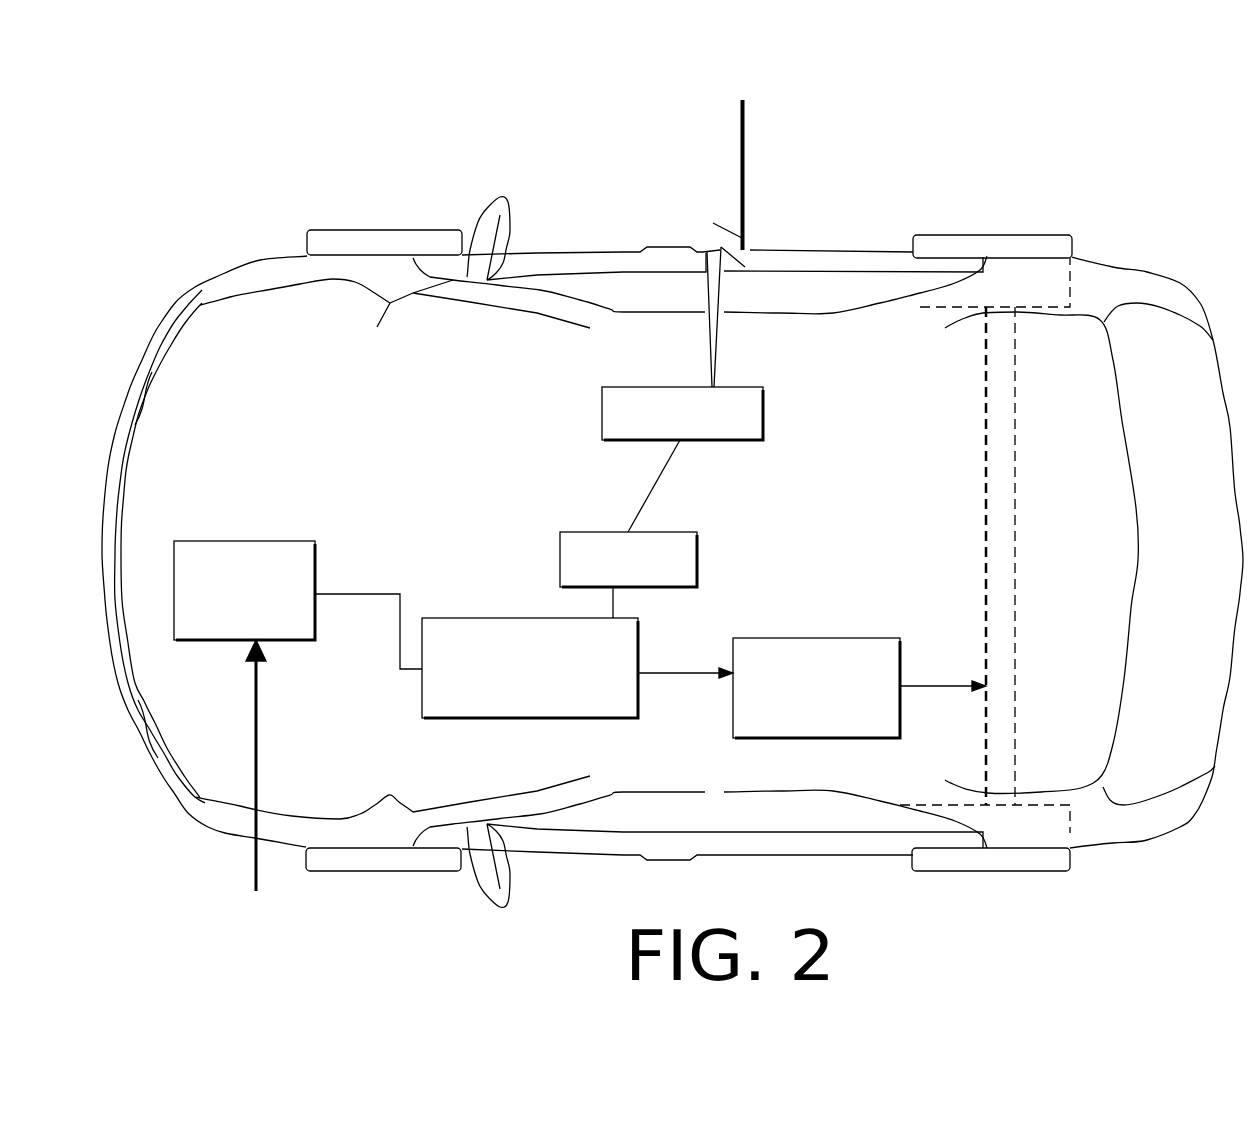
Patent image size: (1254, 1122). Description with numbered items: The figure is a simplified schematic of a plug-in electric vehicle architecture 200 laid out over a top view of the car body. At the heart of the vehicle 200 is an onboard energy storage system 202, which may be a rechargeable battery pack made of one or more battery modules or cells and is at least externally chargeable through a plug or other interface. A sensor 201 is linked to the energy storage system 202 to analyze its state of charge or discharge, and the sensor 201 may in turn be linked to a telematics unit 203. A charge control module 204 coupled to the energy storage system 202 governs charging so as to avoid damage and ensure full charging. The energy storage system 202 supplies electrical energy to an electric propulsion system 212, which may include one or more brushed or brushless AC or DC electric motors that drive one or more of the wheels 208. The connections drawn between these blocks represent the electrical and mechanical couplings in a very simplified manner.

The electric vehicle architecture 200 is at (803, 228).
The sensor 201 is at (697, 553).
The onboard energy storage system 202 is at (567, 720).
The telematics unit 203 is at (763, 408).
The charge control module 204 is at (302, 642).
The wheels 208 is at (1007, 250).
The electric propulsion system 212 is at (853, 738).